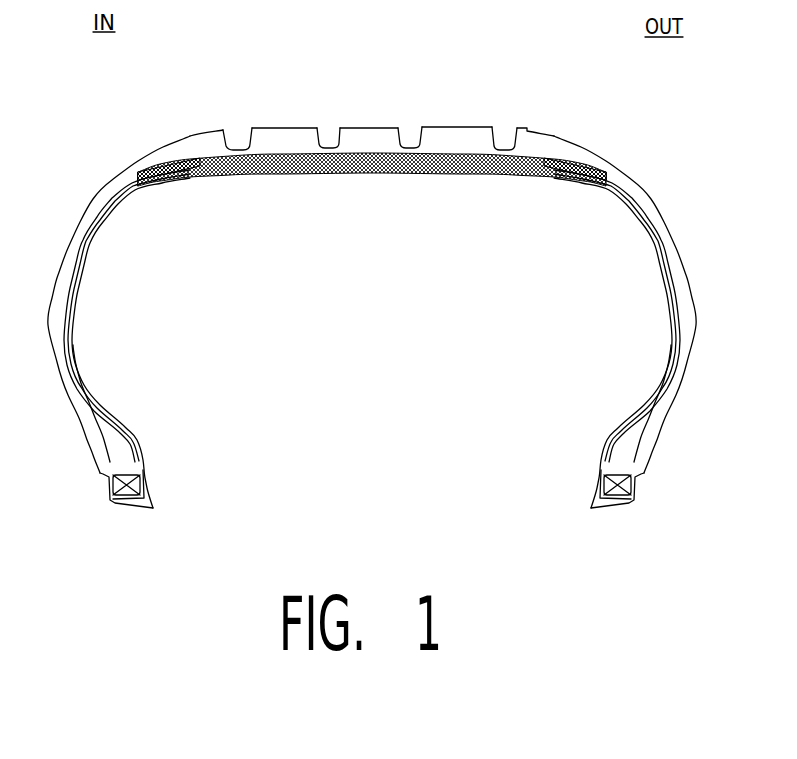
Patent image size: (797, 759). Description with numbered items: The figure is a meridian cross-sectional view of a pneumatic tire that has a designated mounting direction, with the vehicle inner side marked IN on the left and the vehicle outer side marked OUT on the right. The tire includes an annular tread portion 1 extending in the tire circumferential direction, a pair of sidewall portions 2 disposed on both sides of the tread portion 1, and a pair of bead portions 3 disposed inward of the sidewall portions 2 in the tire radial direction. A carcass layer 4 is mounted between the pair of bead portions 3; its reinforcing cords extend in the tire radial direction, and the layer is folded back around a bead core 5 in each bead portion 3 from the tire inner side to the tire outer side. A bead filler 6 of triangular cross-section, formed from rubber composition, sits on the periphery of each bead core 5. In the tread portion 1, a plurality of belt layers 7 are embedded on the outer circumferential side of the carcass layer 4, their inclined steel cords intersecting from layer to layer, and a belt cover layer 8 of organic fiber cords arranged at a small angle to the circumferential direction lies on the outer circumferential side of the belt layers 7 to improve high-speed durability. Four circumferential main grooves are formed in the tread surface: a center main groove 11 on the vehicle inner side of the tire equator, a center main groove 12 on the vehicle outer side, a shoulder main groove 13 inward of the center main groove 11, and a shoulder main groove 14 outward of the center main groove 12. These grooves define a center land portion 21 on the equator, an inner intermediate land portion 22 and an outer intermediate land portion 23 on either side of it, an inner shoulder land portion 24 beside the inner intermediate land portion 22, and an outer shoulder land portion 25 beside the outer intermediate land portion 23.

The tread portion 1 is at (434, 122).
The sidewall portion 2 is at (69, 236).
The bead portion 3 is at (96, 475).
The carcass layer 4 is at (630, 210).
The bead core 5 is at (141, 484).
The bead filler 6 is at (122, 456).
The belt layer 7 is at (507, 176).
The belt cover layer 8 is at (172, 168).
The center main groove 11 is at (325, 137).
The center main groove 12 is at (405, 135).
The shoulder main groove 13 is at (233, 142).
The shoulder main groove 14 is at (493, 135).
The center land portion 21 is at (383, 137).
The inner intermediate land portion 22 is at (297, 135).
The outer intermediate land portion 23 is at (455, 137).
The inner shoulder land portion 24 is at (217, 137).
The outer shoulder land portion 25 is at (588, 153).